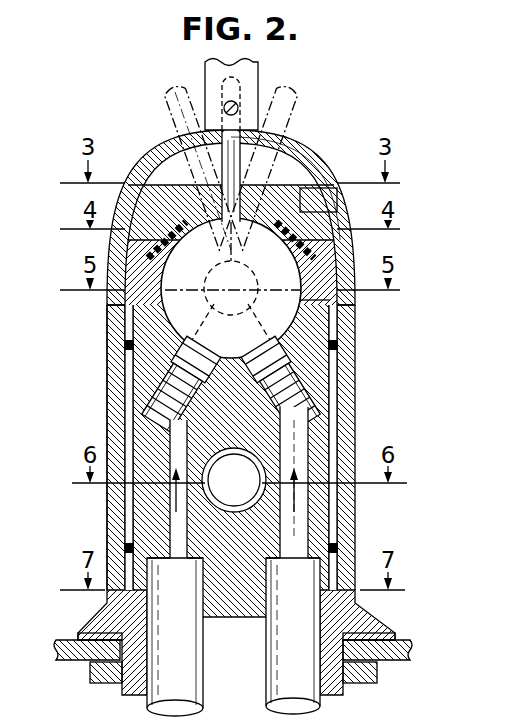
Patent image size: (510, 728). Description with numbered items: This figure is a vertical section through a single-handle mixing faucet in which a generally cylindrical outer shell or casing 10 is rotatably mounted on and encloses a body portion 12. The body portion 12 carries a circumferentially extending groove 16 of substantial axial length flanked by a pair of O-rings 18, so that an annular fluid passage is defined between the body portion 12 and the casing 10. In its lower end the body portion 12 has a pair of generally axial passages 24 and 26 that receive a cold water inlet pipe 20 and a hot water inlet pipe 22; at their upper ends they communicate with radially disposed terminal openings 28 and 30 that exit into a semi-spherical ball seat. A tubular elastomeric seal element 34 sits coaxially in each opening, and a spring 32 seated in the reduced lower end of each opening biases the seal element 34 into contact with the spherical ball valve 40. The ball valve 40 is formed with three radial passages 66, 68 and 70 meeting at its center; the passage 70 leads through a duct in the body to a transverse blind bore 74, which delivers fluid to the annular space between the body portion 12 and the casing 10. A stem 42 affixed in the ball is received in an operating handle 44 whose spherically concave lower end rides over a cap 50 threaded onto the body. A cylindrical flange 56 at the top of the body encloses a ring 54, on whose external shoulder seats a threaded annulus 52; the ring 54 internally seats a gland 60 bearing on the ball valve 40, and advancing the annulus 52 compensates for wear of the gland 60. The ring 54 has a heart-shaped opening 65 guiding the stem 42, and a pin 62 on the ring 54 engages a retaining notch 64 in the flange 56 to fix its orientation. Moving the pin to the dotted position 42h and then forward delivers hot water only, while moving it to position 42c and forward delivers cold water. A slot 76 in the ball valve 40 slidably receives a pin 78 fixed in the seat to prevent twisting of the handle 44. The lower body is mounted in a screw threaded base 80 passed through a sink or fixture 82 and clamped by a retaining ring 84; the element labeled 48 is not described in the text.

The outer shell or casing 10 is at (101, 358).
The body portion 12 is at (327, 376).
The circumferentially extending groove or cavity 16 is at (129, 377).
The O-rings 18 is at (343, 345).
The cold water inlet pipe 20 is at (168, 688).
The hot water inlet pipe 22 is at (297, 683).
The passage 24 is at (200, 497).
The passage 26 is at (307, 452).
The terminal opening 28 is at (143, 410).
The terminal opening 30 is at (306, 394).
The spring 32 is at (147, 402).
The tubular seal element 34 is at (121, 327).
The spherical ball valve 40 is at (170, 279).
The stem 42 is at (248, 157).
The hot position of the stem 42h is at (178, 92).
The cold position of the stem 42c is at (298, 90).
The operating handle 44 is at (247, 78).
The cap liner 48 is at (293, 172).
The cap 50 is at (130, 214).
The annulus 52 is at (310, 197).
The ring 54 is at (136, 178).
The cylindrical flange 56 is at (332, 243).
The sealing washer, gasket or gland 60 is at (190, 230).
The pin 62 is at (216, 266).
The retaining notch 64 is at (148, 241).
The heart-shaped opening 65 is at (192, 150).
The radial passage 66 is at (204, 324).
The radial passage 68 is at (256, 322).
The radial passage 70 is at (236, 265).
The blind bore or passage 74 is at (292, 512).
The slot 76 is at (296, 262).
The pin 78 is at (322, 294).
The screw threaded base 80 is at (104, 619).
The sink or fixture 82 is at (78, 654).
The retaining ring 84 is at (100, 679).